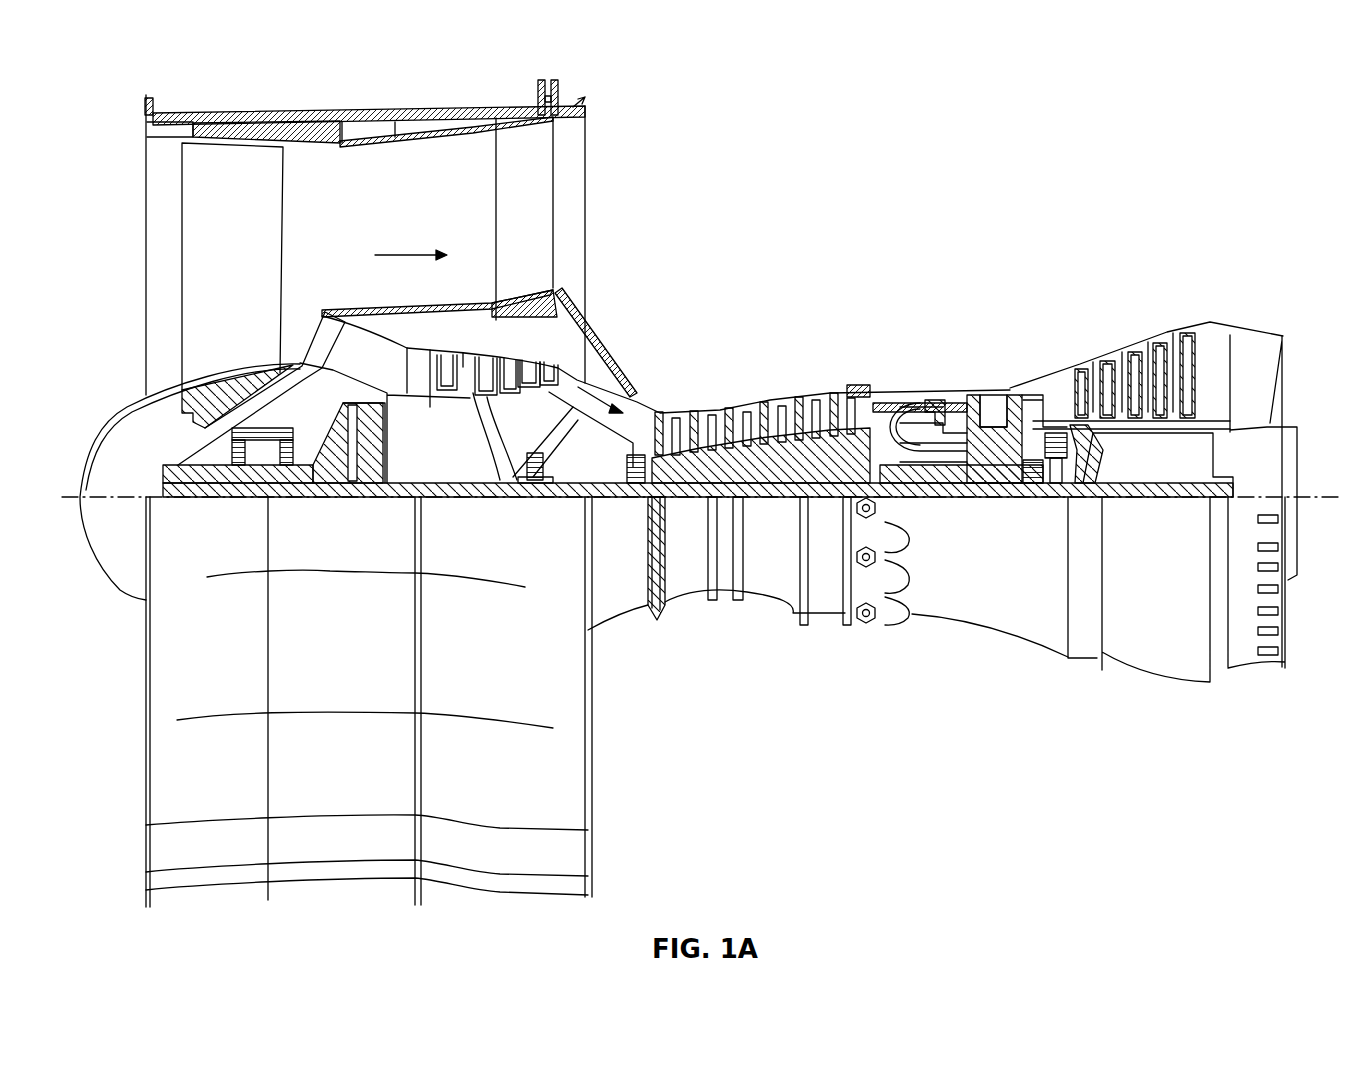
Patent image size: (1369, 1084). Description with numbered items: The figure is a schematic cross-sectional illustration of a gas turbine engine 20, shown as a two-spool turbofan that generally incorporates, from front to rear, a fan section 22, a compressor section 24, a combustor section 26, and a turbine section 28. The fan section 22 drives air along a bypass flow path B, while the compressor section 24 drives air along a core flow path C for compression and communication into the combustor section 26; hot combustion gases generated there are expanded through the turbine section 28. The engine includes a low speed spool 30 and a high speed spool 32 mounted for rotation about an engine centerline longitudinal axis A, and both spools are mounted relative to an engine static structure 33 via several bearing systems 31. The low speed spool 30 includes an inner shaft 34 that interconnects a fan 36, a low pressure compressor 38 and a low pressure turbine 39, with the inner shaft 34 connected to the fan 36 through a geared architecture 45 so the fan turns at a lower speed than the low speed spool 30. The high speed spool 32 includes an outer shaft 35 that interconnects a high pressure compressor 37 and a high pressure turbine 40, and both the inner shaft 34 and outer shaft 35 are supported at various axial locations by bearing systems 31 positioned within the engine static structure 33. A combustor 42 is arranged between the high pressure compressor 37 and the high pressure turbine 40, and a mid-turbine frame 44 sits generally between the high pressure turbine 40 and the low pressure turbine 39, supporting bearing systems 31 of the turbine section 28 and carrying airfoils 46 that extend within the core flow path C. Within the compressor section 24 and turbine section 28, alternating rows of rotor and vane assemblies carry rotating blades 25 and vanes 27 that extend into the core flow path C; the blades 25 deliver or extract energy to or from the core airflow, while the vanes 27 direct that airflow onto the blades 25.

The gas turbine engine 20 is at (1238, 74).
The fan section 22 is at (347, 78).
The compressor section 24 is at (650, 207).
The blades 25 is at (440, 352).
The combustor section 26 is at (992, 232).
The vanes 27 is at (463, 367).
The turbine section 28 is at (1200, 218).
The low speed spool 30 is at (782, 505).
The bearing systems 31 is at (252, 450).
The high speed spool 32 is at (782, 402).
The engine static structure 33 is at (825, 628).
The inner shaft 34 is at (600, 500).
The outer shaft 35 is at (1000, 470).
The fan 36 is at (246, 283).
The high pressure compressor 37 is at (735, 412).
The low pressure compressor 38 is at (508, 353).
The low pressure turbine 39 is at (1140, 342).
The high pressure turbine 40 is at (990, 396).
The combustor 42 is at (920, 425).
The mid-turbine frame 44 is at (1030, 378).
The geared architecture 45 is at (346, 470).
The airfoils 46 is at (1090, 433).
The engine centerline longitudinal axis A is at (1305, 492).
The bypass flow path B is at (410, 255).
The core flow path C is at (596, 388).